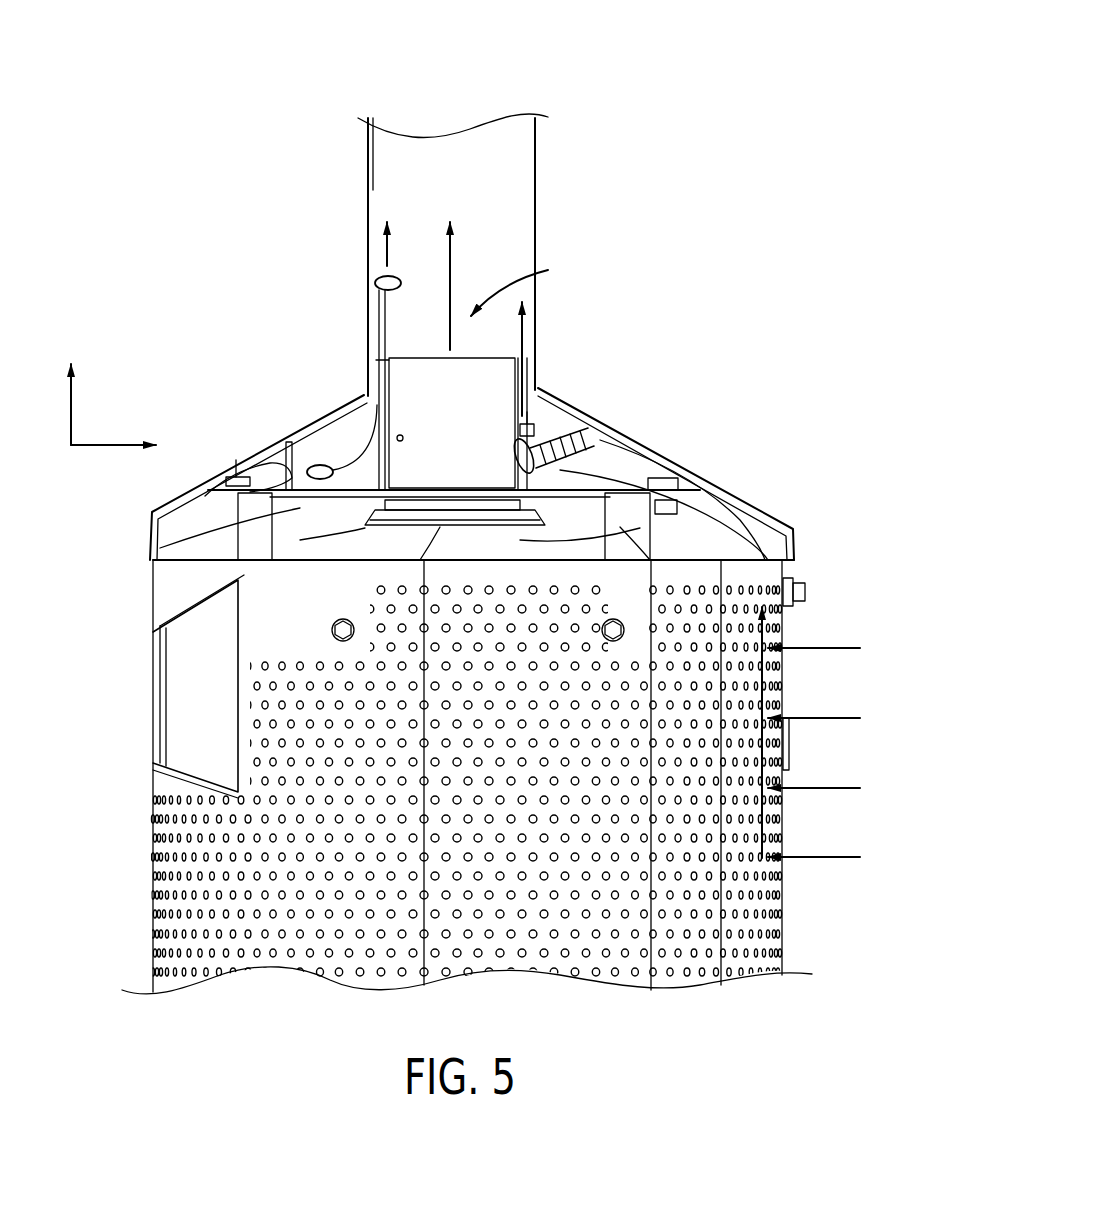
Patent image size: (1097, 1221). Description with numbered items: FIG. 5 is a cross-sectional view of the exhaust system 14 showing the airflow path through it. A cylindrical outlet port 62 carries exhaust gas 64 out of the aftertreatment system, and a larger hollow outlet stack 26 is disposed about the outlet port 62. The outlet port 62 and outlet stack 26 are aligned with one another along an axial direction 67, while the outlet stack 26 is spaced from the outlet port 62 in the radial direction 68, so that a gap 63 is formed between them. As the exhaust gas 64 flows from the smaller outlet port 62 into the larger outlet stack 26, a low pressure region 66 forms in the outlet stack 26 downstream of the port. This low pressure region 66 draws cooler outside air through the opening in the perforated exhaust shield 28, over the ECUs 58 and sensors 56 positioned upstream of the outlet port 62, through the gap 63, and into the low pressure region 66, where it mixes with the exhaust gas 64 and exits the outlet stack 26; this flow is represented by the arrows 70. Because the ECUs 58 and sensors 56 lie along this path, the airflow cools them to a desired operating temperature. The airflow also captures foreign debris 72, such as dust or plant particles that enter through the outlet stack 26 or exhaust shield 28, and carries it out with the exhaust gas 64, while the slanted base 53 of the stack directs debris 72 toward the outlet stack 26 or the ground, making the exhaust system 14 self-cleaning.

The exhaust system 14 is at (790, 104).
The outlet stack 26 is at (368, 256).
The exhaust shield 28 is at (185, 868).
The slanted base 53 is at (240, 464).
The sensors 56 is at (570, 431).
The ECUs 58 is at (789, 618).
The outlet port 62 is at (482, 372).
The gap 63 is at (386, 360).
The exhaust gas 64 is at (452, 255).
The low pressure region 66 is at (546, 270).
The axial direction 67 is at (72, 403).
The radial direction 68 is at (118, 447).
The arrows 70 is at (526, 366).
The foreign debris 72 is at (318, 464).